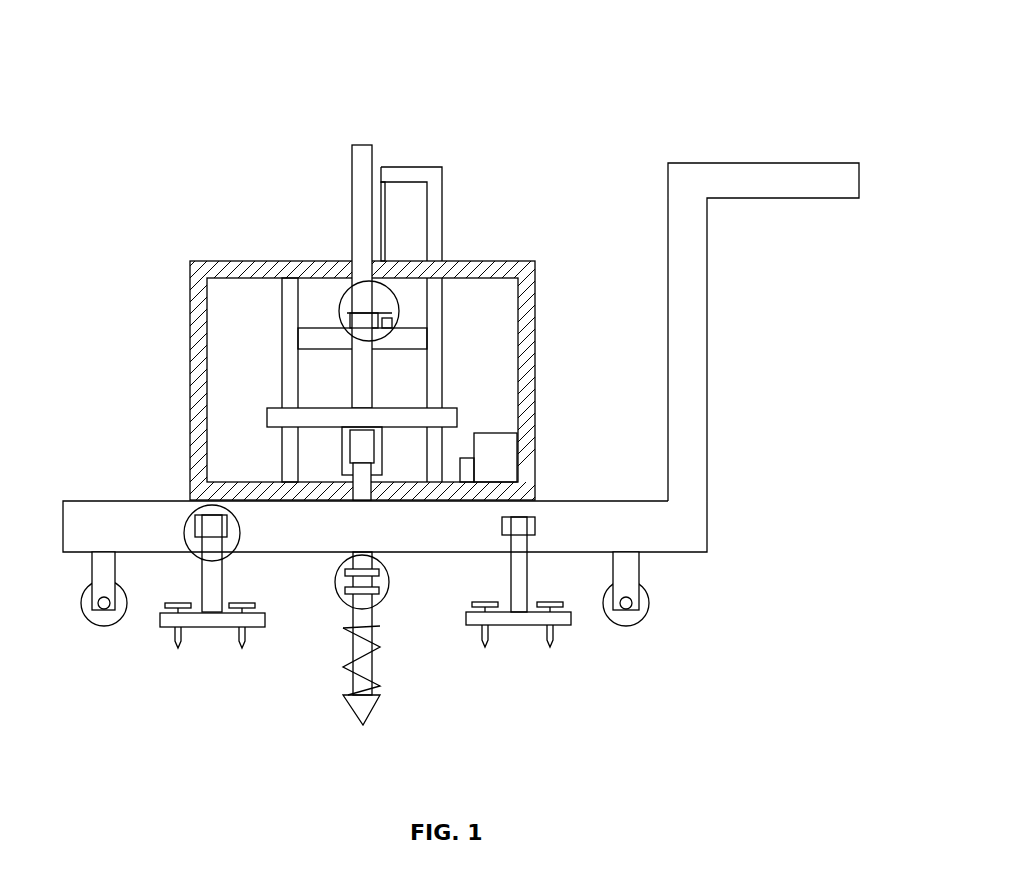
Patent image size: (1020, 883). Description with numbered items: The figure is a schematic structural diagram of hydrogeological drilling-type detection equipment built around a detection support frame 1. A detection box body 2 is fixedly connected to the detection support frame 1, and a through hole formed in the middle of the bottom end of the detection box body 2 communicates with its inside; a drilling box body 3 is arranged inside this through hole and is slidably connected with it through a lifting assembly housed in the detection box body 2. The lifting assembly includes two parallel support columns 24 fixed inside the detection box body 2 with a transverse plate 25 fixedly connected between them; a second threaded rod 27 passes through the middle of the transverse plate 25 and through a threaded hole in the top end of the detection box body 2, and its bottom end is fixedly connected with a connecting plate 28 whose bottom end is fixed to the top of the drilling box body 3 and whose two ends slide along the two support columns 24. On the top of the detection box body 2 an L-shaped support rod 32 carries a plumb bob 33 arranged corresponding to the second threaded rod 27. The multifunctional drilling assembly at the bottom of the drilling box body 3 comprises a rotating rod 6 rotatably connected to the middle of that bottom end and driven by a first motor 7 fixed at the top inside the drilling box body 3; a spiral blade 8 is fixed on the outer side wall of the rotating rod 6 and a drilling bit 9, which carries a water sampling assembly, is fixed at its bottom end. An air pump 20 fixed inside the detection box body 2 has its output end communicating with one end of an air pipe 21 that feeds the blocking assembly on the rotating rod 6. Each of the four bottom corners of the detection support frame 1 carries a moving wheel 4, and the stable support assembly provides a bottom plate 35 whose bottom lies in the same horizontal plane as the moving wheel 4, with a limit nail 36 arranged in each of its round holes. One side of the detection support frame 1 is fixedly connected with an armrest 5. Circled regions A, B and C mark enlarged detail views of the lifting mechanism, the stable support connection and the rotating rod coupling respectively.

The detection support frame 1 is at (93, 523).
The detection box body 2 is at (197, 467).
The drilling box body 3 is at (343, 432).
The moving wheel 4 is at (90, 587).
The armrest (handle) 5 is at (733, 175).
The rotating rod 6 is at (357, 480).
The first motor 7 is at (352, 452).
The spiral blade 8 is at (378, 653).
The drilling bit 9 is at (380, 705).
The air pump 20 is at (508, 477).
The air pipe 21 is at (466, 459).
The support column 24 is at (288, 478).
The transverse plate 25 is at (315, 338).
The second threaded rod 27 is at (360, 229).
The connecting plate 28 is at (457, 417).
The L-shaped support rod 32 is at (437, 238).
The plumb bob 33 is at (388, 231).
The bottom plate 35 is at (163, 623).
The limit nail 36 is at (243, 637).
The detail A is at (340, 306).
The detail B is at (193, 514).
The detail C is at (345, 605).